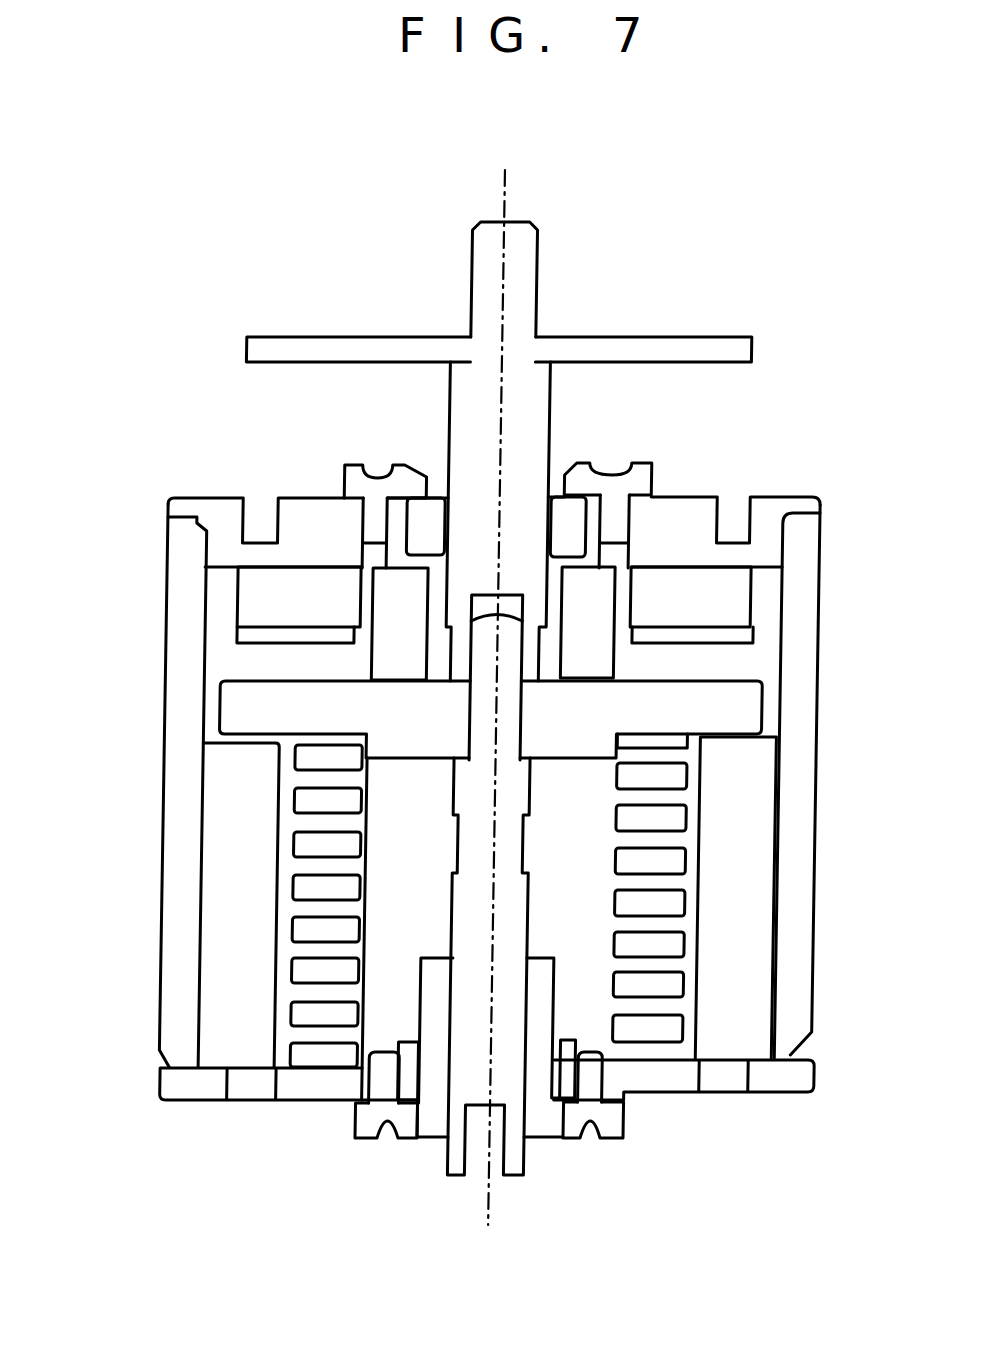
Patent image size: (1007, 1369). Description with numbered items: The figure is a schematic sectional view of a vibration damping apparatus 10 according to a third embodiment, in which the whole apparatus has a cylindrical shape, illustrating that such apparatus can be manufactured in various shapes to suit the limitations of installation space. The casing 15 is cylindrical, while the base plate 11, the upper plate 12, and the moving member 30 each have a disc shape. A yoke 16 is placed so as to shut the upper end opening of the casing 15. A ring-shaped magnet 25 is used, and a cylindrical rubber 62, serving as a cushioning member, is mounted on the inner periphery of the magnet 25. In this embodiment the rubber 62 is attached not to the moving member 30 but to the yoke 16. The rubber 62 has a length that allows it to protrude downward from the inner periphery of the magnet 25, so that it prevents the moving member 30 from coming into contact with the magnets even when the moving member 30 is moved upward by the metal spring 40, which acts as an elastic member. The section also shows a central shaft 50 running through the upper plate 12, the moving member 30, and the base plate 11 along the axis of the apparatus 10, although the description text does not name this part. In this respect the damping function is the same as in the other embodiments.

The vibration damping apparatus 10 is at (121, 475).
The base plate 11 is at (194, 1095).
The upper plate 12 is at (624, 340).
The casing 15 is at (817, 570).
The yoke 16 is at (697, 528).
The magnet 25 is at (252, 617).
The moving member 30 is at (740, 707).
The metal spring 40 is at (677, 813).
The rotating shaft 50 is at (534, 437).
The rubber 62 is at (598, 597).